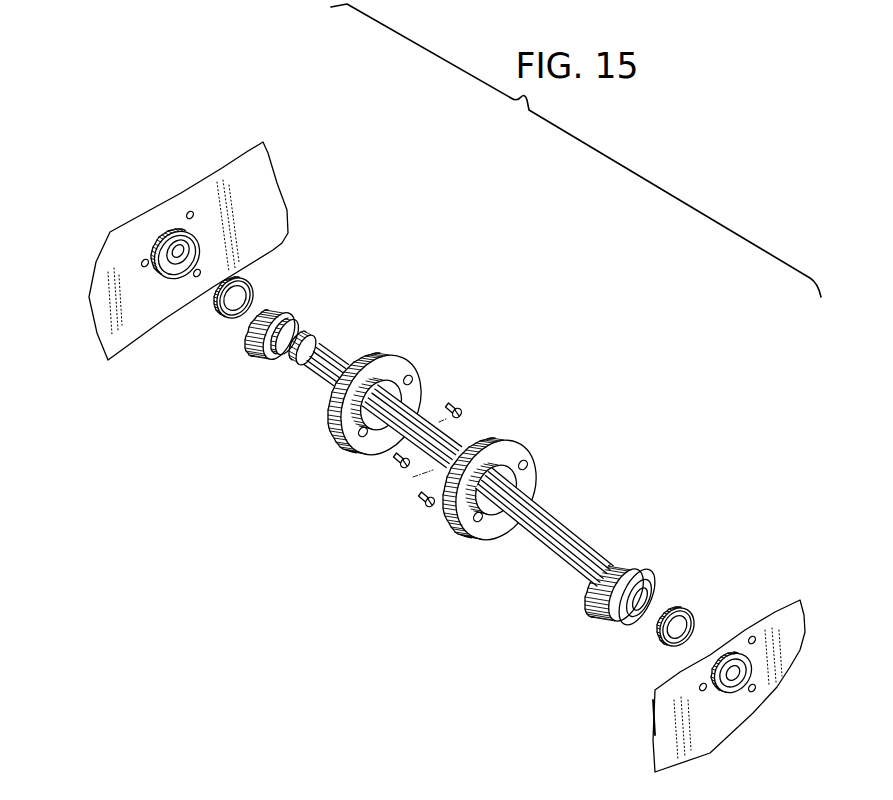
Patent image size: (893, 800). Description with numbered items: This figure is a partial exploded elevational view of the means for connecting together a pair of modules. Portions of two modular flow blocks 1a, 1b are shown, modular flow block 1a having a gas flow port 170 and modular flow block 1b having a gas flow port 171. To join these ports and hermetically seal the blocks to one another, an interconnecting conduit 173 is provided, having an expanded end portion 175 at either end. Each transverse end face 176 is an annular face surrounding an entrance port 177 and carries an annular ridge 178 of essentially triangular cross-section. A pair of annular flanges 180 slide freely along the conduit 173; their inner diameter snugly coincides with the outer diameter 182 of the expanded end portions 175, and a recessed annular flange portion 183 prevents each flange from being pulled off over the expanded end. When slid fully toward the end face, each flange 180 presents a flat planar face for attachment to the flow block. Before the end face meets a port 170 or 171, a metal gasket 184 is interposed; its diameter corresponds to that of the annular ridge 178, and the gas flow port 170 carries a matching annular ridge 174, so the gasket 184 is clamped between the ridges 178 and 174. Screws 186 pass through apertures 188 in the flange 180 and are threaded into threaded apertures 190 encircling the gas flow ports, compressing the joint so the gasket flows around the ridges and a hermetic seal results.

The modular flow block 1a is at (270, 190).
The modular flow block 1b is at (787, 663).
The gas flow port 170 is at (165, 240).
The gas flow port 171 is at (658, 707).
The interconnecting conduit 173 is at (452, 445).
The annular ridge 174 is at (174, 248).
The expanded end portion 175 is at (297, 313).
The transverse end face 176 is at (272, 312).
The entrance port 177 is at (295, 305).
The annular ridge 178 is at (257, 322).
The annular flange 180 is at (423, 395).
The outer diameter 182 is at (258, 340).
The recessed annular flange portion 183 is at (377, 428).
The metal gasket 184 is at (247, 287).
The screw 186 is at (453, 403).
The aperture 188 is at (413, 377).
The threaded aperture 190 is at (141, 265).